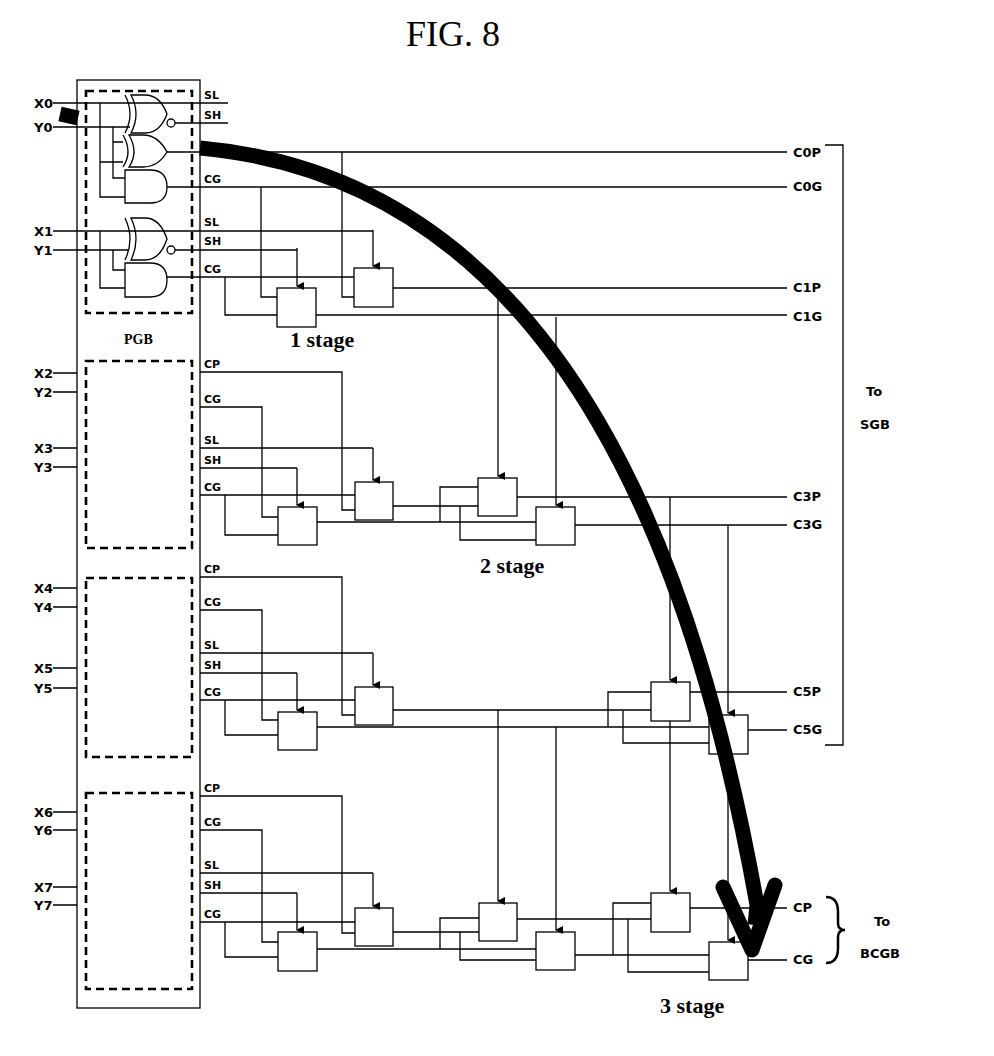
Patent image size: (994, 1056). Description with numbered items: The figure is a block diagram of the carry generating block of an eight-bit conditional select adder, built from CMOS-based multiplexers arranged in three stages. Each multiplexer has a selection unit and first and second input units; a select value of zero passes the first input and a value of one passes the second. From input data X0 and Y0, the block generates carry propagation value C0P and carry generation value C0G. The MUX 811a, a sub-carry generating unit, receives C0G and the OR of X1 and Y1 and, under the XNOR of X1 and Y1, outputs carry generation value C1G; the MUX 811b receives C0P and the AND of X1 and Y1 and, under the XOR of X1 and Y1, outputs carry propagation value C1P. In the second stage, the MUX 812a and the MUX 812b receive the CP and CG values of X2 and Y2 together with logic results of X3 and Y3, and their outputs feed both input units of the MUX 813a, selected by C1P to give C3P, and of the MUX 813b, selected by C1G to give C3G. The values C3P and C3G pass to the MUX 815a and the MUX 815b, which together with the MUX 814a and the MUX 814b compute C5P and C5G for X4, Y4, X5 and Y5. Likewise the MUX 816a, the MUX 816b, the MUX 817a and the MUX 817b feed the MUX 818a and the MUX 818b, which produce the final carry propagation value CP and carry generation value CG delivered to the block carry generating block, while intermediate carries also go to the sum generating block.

The MUX 811a is at (318, 278).
The MUX 811b is at (394, 278).
The MUX 812a is at (318, 500).
The MUX 812b is at (385, 484).
The MUX 813a is at (508, 477).
The MUX 813b is at (565, 507).
The MUX 814a is at (318, 703).
The MUX 814b is at (385, 689).
The MUX 815a is at (650, 683).
The MUX 815b is at (747, 720).
The MUX 816a is at (318, 923).
The MUX 816b is at (385, 909).
The MUX 817a is at (508, 902).
The MUX 817b is at (565, 933).
The MUX 818a is at (678, 893).
The MUX 818b is at (749, 972).